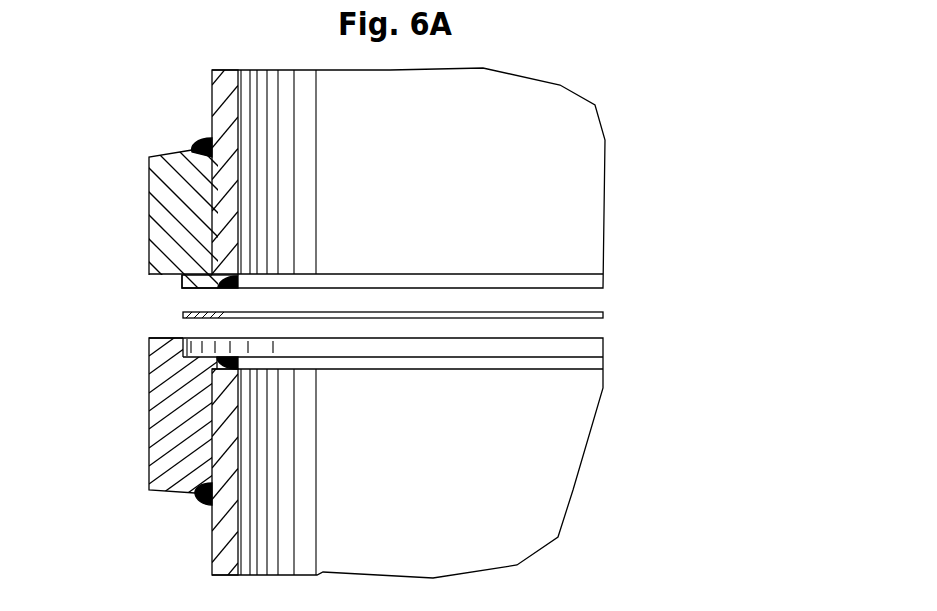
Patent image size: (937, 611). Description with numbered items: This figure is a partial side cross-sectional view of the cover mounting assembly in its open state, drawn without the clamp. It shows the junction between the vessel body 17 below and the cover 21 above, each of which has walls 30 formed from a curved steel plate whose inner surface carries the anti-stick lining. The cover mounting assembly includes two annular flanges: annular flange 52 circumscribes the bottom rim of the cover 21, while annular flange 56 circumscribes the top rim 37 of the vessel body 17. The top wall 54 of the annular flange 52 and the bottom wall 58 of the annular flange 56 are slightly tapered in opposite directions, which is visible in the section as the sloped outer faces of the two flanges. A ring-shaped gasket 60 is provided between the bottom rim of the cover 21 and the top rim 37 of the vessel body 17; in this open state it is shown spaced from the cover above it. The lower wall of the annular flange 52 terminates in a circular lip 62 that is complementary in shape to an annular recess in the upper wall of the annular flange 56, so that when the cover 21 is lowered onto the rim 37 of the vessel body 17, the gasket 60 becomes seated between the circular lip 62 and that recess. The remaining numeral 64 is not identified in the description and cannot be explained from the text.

The vessel body 17 is at (448, 536).
The cover 21 is at (445, 160).
The walls 30 is at (211, 93).
The top rim 37 is at (453, 382).
The annular flange 52 is at (130, 215).
The top wall 54 is at (157, 157).
The annular flange 56 is at (133, 418).
The bottom wall 58 is at (162, 493).
The ring-shaped gasket 60 is at (387, 313).
The circular lip 62 is at (190, 289).
The spacer 64 is at (198, 355).